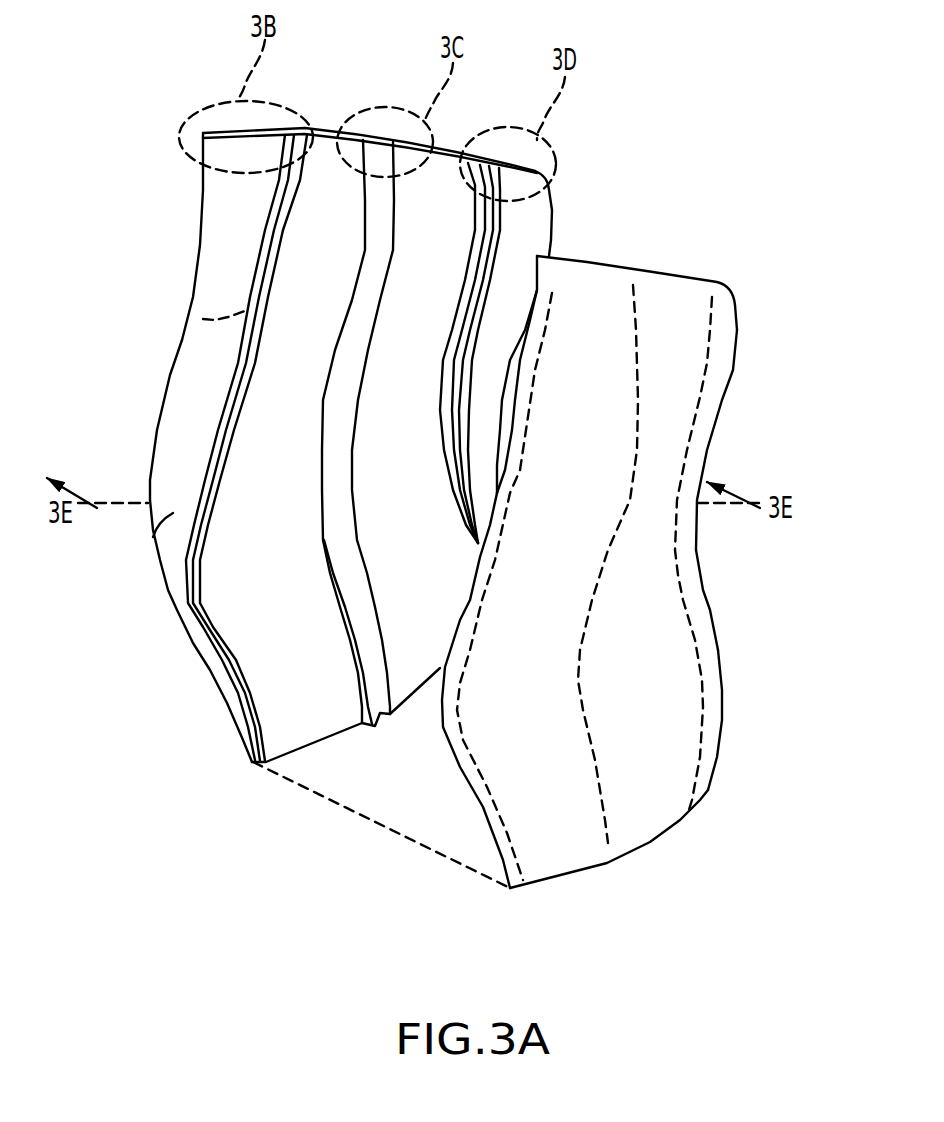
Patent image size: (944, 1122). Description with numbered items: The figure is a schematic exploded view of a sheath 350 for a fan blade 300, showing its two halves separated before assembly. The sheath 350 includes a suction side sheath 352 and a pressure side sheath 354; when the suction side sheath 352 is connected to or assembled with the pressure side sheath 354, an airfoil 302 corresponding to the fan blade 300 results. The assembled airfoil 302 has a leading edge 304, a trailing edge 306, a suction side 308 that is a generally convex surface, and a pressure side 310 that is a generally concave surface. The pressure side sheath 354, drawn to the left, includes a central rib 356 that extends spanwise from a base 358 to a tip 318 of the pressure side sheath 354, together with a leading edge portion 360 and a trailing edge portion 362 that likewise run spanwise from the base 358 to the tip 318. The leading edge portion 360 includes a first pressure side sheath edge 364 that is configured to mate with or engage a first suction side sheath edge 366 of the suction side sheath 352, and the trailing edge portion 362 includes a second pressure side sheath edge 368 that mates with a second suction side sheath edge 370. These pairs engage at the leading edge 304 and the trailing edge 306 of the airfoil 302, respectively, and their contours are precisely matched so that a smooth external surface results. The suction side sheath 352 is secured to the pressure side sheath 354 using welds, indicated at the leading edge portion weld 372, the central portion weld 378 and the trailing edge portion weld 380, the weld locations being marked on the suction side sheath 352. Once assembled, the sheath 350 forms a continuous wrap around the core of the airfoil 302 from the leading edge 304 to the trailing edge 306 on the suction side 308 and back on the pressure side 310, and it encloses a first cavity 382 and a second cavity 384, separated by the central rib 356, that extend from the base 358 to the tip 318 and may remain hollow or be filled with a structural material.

The fan blade 300 is at (122, 137).
The airfoil 302 is at (157, 673).
The leading edge 304 is at (148, 452).
The trailing edge 306 is at (553, 200).
The suction side 308 is at (657, 593).
The pressure side 310 is at (203, 318).
The tip 318 is at (322, 135).
The sheath 350 is at (150, 582).
The suction side sheath 352 is at (663, 452).
The pressure side sheath 354 is at (153, 537).
The central rib 356 is at (383, 727).
The base 358 is at (297, 750).
The leading edge portion 360 is at (193, 405).
The trailing edge portion 362 is at (520, 241).
The first pressure side sheath edge 364 is at (268, 258).
The first suction side sheath edge 366 is at (460, 767).
The second pressure side sheath edge 368 is at (473, 340).
The second suction side sheath edge 370 is at (723, 665).
The leading edge portion weld 372 is at (457, 698).
The central portion weld 378 is at (580, 635).
The trailing edge portion weld 380 is at (703, 710).
The first cavity 382 is at (291, 597).
The second cavity 384 is at (428, 562).